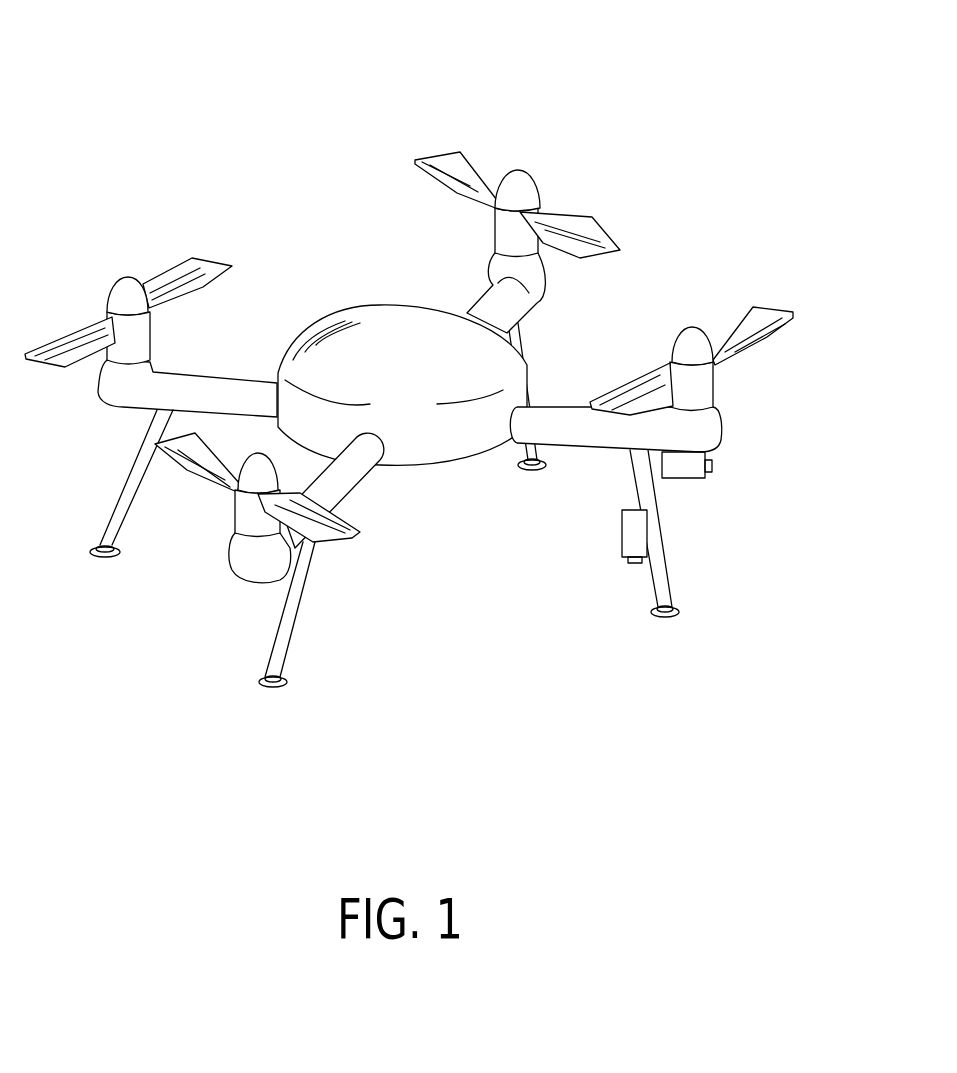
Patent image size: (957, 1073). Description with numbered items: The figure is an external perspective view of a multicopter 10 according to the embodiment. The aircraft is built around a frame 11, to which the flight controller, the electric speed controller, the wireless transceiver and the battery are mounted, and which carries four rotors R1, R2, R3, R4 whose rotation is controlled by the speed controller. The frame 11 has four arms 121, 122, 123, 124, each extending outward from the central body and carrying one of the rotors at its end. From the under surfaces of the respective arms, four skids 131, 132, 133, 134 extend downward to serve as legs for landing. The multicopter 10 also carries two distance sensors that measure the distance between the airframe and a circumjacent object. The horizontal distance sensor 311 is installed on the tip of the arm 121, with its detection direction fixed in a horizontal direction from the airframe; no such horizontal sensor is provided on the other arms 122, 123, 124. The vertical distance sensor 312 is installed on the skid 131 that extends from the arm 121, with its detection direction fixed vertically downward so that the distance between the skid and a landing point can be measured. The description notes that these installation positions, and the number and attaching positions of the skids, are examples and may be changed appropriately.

The multicopter 10 is at (70, 62).
The frame 11 is at (383, 298).
The rotor R1 is at (747, 310).
The rotor R2 is at (450, 160).
The rotor R3 is at (190, 267).
The rotor R4 is at (347, 533).
The arm 121 is at (592, 432).
The arm 122 is at (347, 480).
The arm 123 is at (222, 387).
The arm 124 is at (502, 304).
The skid 131 is at (667, 563).
The skid 132 is at (297, 613).
The skid 133 is at (133, 470).
The skid 134 is at (520, 340).
The horizontal distance sensor 311 is at (693, 470).
The vertical distance sensor 312 is at (630, 545).